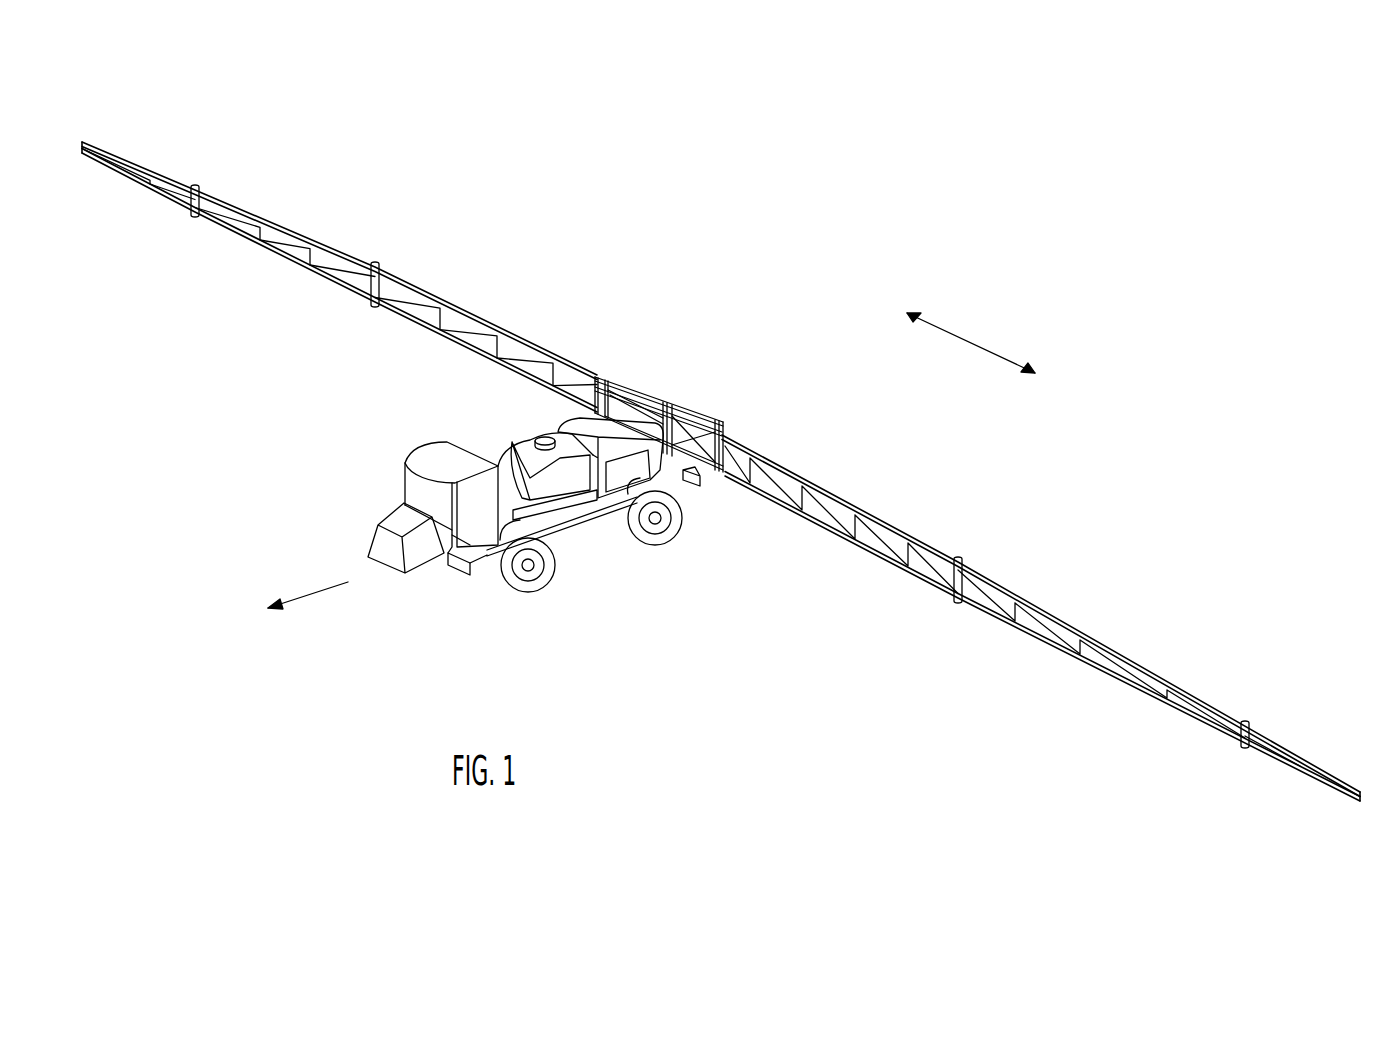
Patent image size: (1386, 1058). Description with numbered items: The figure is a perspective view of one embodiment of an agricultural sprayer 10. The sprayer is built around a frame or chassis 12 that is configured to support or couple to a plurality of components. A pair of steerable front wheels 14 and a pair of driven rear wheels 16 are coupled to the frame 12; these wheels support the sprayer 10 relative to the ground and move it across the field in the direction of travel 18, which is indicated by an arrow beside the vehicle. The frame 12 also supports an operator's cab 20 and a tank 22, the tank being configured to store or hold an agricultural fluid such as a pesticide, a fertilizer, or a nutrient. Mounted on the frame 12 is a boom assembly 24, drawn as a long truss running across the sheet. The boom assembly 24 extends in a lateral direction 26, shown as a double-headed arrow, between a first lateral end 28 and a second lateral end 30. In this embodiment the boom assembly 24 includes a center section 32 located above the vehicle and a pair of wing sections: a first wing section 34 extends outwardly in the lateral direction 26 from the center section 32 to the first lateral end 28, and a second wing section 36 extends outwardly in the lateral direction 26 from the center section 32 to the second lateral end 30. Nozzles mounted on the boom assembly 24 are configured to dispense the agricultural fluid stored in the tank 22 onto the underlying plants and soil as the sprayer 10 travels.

The agricultural sprayer 10 is at (176, 128).
The frame 12 is at (562, 538).
The front wheels 14 is at (530, 592).
The rear wheels 16 is at (660, 541).
The direction of travel 18 is at (310, 598).
The operator's cab 20 is at (432, 457).
The tank 22 is at (507, 447).
The boom assembly 24 is at (773, 429).
The lateral direction 26 is at (970, 343).
The first lateral end 28 is at (1364, 774).
The second lateral end 30 is at (48, 121).
The center section 32 is at (680, 392).
The first wing section 34 is at (1074, 628).
The second wing section 36 is at (268, 223).